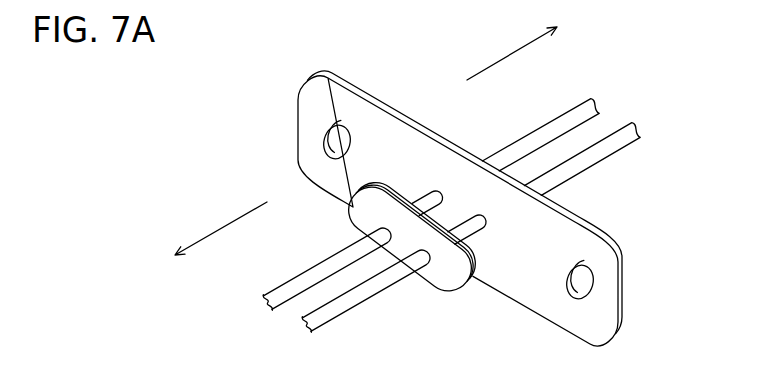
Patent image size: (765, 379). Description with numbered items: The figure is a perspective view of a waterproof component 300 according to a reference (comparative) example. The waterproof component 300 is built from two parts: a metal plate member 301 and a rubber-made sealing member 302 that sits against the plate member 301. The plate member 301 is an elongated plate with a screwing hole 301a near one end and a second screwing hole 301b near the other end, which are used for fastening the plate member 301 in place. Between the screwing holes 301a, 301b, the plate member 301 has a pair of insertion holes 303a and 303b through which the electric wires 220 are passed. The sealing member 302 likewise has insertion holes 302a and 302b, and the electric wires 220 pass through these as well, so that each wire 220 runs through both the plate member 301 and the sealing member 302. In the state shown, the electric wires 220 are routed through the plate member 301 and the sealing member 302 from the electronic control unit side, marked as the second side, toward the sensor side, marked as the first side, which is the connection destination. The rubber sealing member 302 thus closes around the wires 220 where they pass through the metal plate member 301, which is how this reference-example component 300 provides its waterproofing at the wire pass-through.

The waterproof component 300 is at (297, 58).
The plate member 301 is at (368, 118).
The screwing hole 301a is at (322, 150).
The screwing hole 301b is at (594, 283).
The sealing member 302 is at (468, 290).
The insertion hole 302a is at (395, 242).
The insertion hole 302b is at (440, 266).
The insertion hole 303a is at (440, 190).
The insertion hole 303b is at (485, 214).
The electric wire 220 is at (300, 276).